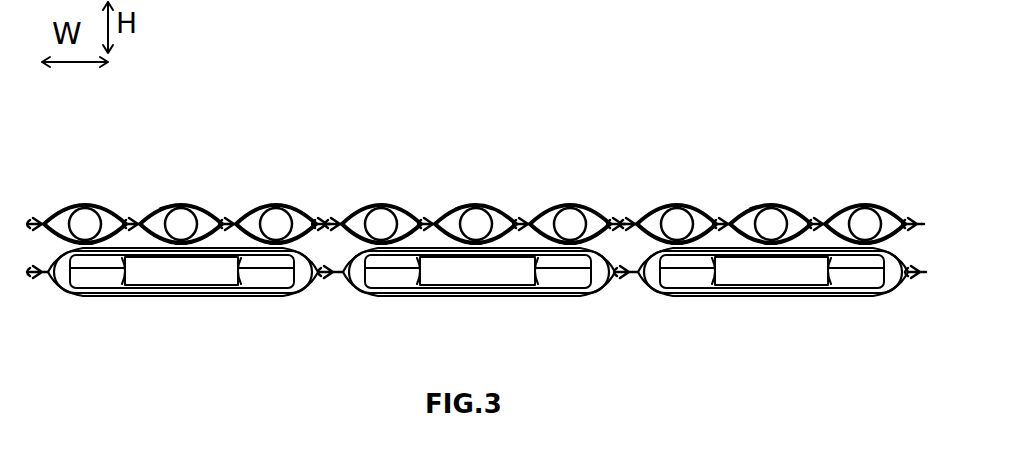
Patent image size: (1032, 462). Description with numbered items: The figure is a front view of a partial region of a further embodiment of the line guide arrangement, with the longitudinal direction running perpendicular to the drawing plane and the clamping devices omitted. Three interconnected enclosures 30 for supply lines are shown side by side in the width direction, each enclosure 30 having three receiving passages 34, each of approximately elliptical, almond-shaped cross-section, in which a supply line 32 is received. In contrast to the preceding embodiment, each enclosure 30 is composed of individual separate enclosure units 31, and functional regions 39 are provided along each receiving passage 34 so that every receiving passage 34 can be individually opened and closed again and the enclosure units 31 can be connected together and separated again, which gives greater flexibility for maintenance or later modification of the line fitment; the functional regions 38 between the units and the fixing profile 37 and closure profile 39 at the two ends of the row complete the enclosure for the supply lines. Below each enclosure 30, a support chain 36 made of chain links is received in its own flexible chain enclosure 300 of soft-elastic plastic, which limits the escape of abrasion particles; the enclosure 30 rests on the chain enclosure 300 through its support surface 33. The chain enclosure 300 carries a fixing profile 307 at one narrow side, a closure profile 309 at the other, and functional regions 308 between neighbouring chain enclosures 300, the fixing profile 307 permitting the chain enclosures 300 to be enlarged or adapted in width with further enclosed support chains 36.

The enclosure for supply lines 30 is at (211, 115).
The enclosure unit of the enclosure 31 is at (103, 205).
The supply line 32 is at (181, 210).
The support surface 33 is at (224, 242).
The receiving passage for supply line 34 is at (150, 207).
The support chain 36 is at (157, 262).
The fixing profile of the enclosure for supply lines 37 is at (37, 212).
The functional region of the enclosure for supply lines 38 is at (344, 194).
The closure profile of the enclosure for supply lines 39 is at (918, 212).
The chain enclosure 300 is at (352, 285).
The fixing profile of the chain enclosure 307 is at (36, 280).
The functional region of the chain enclosure 308 is at (321, 301).
The closure profile of the chain enclosure 309 is at (912, 282).